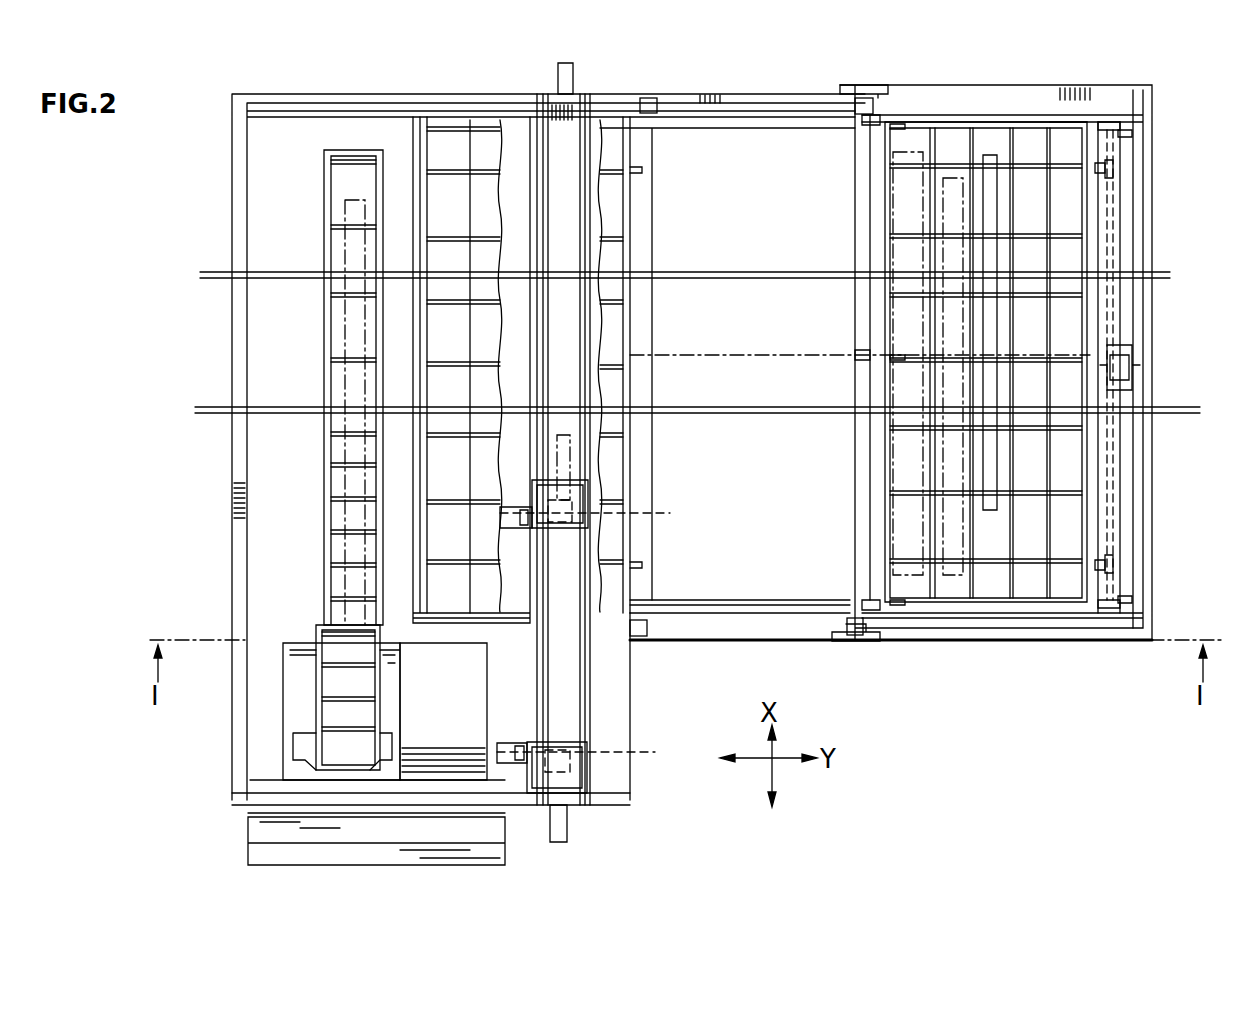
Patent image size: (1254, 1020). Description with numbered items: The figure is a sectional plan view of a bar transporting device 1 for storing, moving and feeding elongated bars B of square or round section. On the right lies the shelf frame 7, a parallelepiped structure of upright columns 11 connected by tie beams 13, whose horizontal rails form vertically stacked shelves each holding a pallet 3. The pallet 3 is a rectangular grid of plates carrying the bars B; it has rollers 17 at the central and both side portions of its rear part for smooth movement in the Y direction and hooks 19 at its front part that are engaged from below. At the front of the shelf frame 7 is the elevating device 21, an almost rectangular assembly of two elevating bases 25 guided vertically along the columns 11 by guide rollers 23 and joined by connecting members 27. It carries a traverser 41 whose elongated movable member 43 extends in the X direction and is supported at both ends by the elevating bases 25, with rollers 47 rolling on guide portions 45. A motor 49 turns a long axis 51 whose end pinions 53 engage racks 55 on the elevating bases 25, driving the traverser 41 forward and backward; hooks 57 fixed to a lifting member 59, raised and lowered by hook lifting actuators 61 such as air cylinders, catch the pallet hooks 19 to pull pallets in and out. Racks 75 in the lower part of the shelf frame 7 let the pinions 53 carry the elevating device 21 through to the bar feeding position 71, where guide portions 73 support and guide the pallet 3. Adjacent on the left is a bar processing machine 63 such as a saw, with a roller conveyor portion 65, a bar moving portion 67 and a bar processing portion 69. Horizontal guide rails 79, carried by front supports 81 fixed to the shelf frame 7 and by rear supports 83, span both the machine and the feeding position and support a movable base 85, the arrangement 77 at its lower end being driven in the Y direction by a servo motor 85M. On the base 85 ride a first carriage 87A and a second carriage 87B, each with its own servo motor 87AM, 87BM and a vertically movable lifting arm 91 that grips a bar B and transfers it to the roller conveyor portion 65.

The bar transporting device 1 is at (218, 356).
The pallet 3 is at (885, 226).
The shelf frame 7 is at (742, 642).
The upright columns 11 is at (657, 113).
The tie beams 13 is at (722, 122).
The rollers 17 is at (898, 128).
The hooks 19 is at (1105, 168).
The elevating device 21 is at (935, 650).
The guide rollers 23 is at (860, 86).
The elevating bases 25 is at (1003, 95).
The connecting members 27 is at (1152, 162).
The traverser 41 is at (1138, 468).
The movable member 43 is at (1133, 430).
The guide portions 45 is at (866, 118).
The rollers 47 is at (1112, 122).
The motor 49 is at (1133, 372).
The feed screw 51 is at (1122, 500).
The pinions 53 is at (1130, 133).
The racks 55 is at (1057, 122).
The hooks 57 is at (1100, 178).
The lifting member 59 is at (1125, 480).
The hook lifting actuators 61 is at (1135, 140).
The bar processing machine 63 is at (292, 640).
The roller conveyor portion 65 is at (315, 487).
The bar moving portion 67 is at (383, 676).
The bar processing portion 69 is at (400, 795).
The bar feeding position 71 is at (533, 469).
The guide portions 73 is at (503, 127).
The racks 75 is at (762, 130).
The base 77 is at (600, 825).
The guide rails 79 is at (350, 112).
The front supports 81 is at (625, 642).
The rear supports 83 is at (240, 112).
The movable base 85 is at (548, 655).
The servo motor 85M is at (573, 78).
The first carriage 87A is at (570, 490).
The servo motor 87AM is at (515, 522).
The second carriage 87B is at (585, 770).
The servo motor 87BM is at (520, 745).
The lifting arm 91 is at (601, 633).
The bars B is at (345, 345).